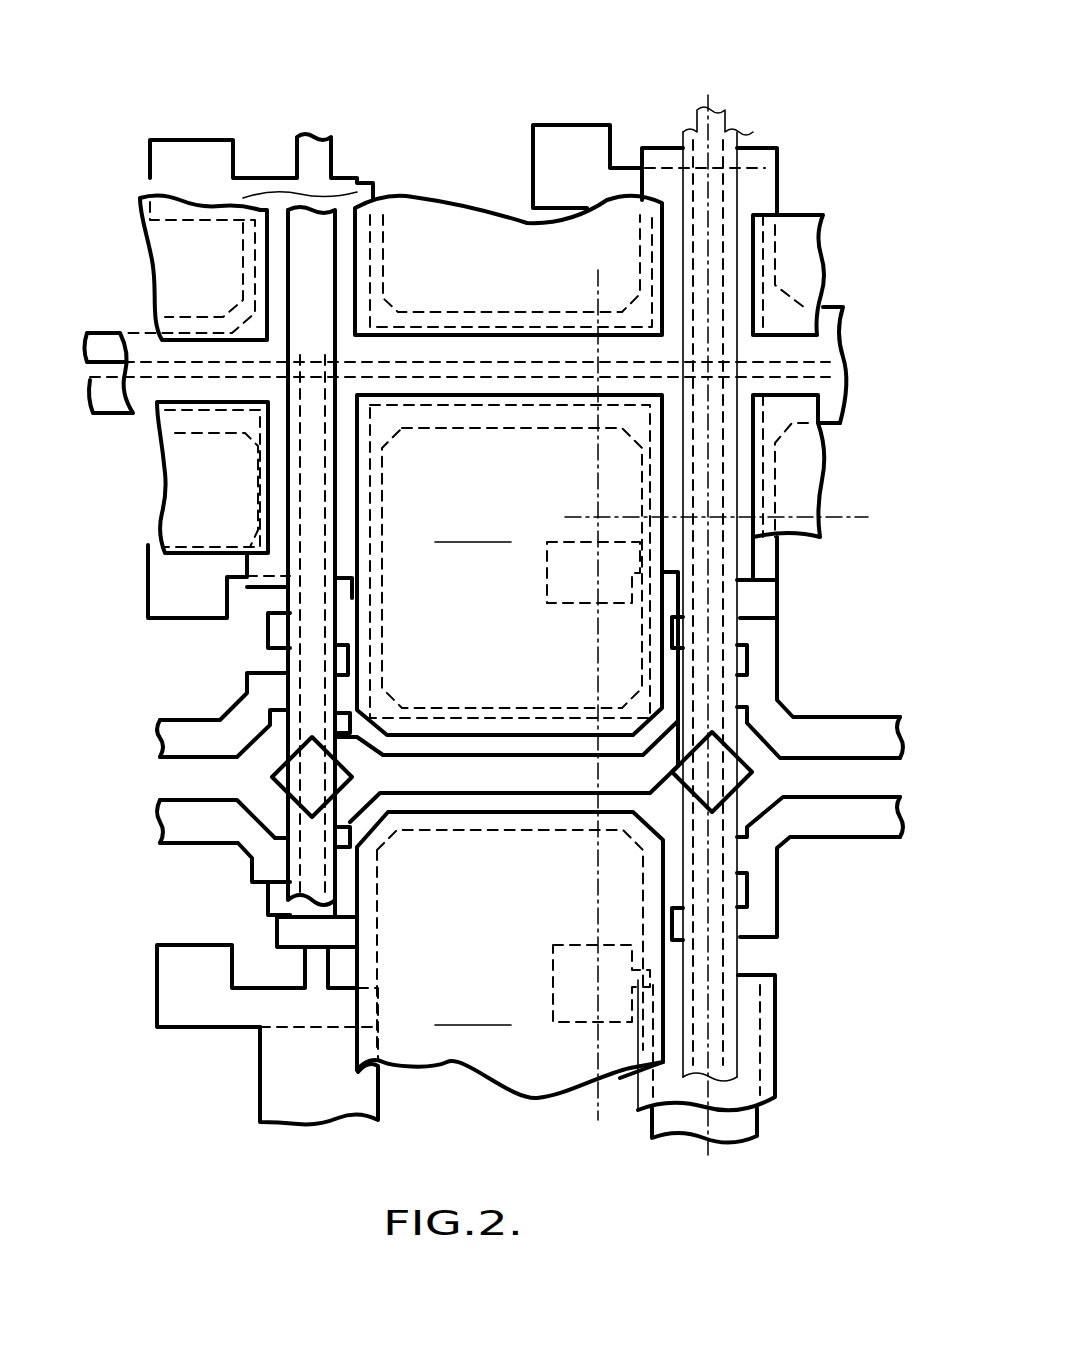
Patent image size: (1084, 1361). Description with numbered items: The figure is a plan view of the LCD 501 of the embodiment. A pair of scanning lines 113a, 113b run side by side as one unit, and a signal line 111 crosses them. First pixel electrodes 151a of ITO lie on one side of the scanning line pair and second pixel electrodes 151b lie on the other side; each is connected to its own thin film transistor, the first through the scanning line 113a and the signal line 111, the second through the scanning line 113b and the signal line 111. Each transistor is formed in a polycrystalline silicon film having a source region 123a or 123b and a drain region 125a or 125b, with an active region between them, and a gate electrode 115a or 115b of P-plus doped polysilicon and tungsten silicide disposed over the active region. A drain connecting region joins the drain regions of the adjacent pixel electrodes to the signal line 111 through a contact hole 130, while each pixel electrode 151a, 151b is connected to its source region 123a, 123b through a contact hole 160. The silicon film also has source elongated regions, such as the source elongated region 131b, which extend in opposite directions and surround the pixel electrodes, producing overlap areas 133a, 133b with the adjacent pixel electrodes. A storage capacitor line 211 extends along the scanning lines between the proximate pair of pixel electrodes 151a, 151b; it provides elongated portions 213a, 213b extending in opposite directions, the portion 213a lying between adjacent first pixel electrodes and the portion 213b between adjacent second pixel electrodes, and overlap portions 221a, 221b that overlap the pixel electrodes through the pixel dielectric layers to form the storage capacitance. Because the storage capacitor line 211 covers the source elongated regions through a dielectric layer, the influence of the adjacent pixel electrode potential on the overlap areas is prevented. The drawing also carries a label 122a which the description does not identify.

The LCD 501 is at (726, 84).
The signal line 111 is at (743, 193).
The scanning line 113a is at (865, 730).
The scanning line 113b is at (860, 820).
The gate electrode 115a is at (305, 680).
The gate electrode 115b is at (300, 925).
The semiconductor layer 122a is at (325, 595).
The source region 123a is at (175, 583).
The source region 123b is at (200, 152).
The drain region 125a is at (375, 720).
The drain region 125b is at (320, 830).
The contact hole 130 is at (300, 778).
The source elongated region 131b is at (278, 1085).
The overlap area 133a is at (545, 402).
The overlap area 133b is at (500, 330).
The first pixel electrode 151a is at (200, 483).
The second pixel electrode 151b is at (417, 203).
The contact hole 160 is at (575, 590).
The storage capacitor line 211 is at (828, 368).
The elongated portion 213a is at (780, 578).
The elongated portion 213b is at (356, 185).
The overlap portion 221a is at (440, 415).
The overlap portion 221b is at (430, 315).